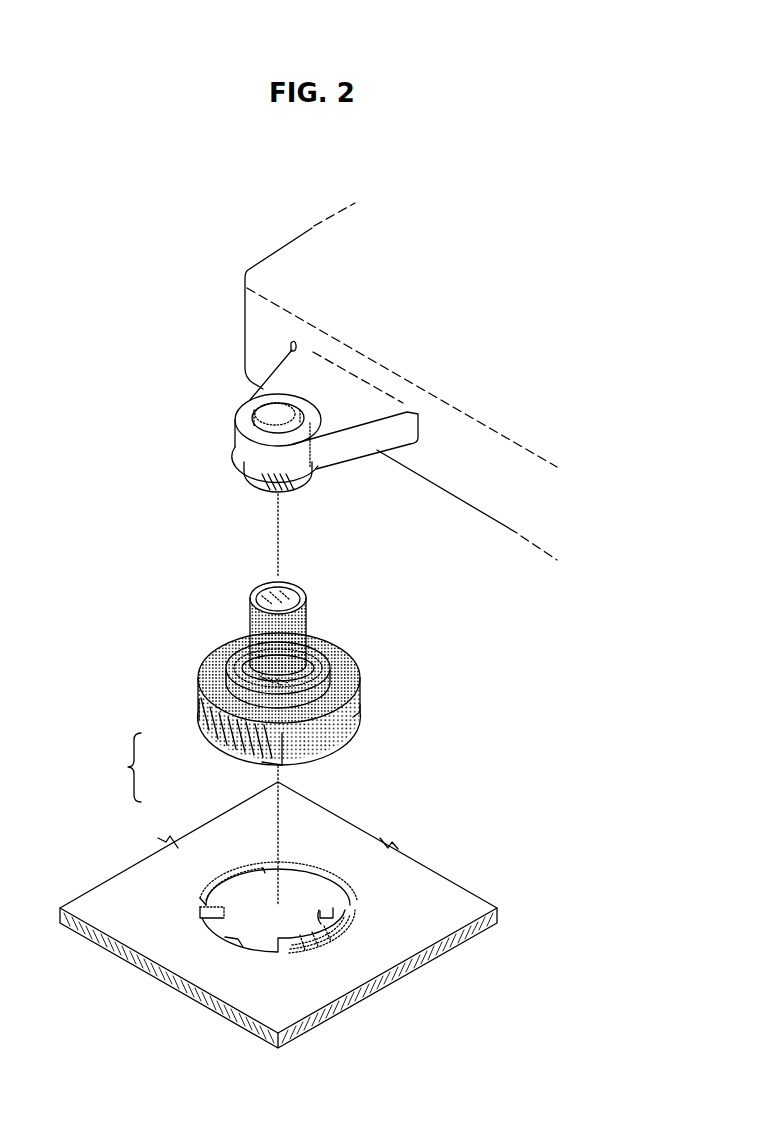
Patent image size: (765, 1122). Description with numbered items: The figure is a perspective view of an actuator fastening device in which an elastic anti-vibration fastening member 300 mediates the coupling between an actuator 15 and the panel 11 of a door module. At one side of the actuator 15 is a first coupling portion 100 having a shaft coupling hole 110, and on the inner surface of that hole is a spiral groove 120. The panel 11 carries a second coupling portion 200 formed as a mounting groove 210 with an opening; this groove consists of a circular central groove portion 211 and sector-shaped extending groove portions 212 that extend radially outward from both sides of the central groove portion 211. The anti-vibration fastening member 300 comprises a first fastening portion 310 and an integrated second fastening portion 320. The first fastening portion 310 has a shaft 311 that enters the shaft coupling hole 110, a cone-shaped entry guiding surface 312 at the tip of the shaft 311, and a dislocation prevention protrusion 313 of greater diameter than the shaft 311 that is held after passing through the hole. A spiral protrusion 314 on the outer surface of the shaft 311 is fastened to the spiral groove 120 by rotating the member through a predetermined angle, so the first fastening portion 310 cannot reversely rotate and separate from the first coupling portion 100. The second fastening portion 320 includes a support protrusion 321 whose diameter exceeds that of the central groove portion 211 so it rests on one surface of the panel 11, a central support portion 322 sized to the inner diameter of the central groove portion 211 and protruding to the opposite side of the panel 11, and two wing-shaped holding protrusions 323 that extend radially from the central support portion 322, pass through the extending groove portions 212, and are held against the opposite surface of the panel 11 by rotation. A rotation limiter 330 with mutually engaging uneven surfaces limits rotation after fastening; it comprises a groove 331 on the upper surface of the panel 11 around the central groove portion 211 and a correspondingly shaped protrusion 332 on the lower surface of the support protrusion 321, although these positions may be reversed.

The panel 11 is at (423, 887).
The actuator 15 is at (283, 263).
The first coupling portion 100 is at (278, 450).
The shaft coupling hole 110 is at (253, 401).
The spiral groove 120 is at (258, 487).
The second coupling portion 200 is at (278, 925).
The mounting groove 210 is at (287, 908).
The central groove portion 211 is at (330, 947).
The extending groove portions 212 is at (323, 868).
The anti-vibration fastening member 300 is at (260, 729).
The first fastening portion 310 is at (289, 614).
The shaft 311 is at (263, 629).
The entry guiding surface 312 is at (291, 586).
The dislocation prevention protrusion 313 is at (249, 597).
The spiral protrusion 314 is at (308, 661).
The second fastening portion 320 is at (320, 703).
The support protrusion 321 is at (355, 657).
The central support portion 322 is at (323, 738).
The holding protrusions 323 is at (362, 720).
The rotation limiter 330 is at (226, 802).
The groove 331 is at (222, 870).
The protrusion 332 is at (197, 742).